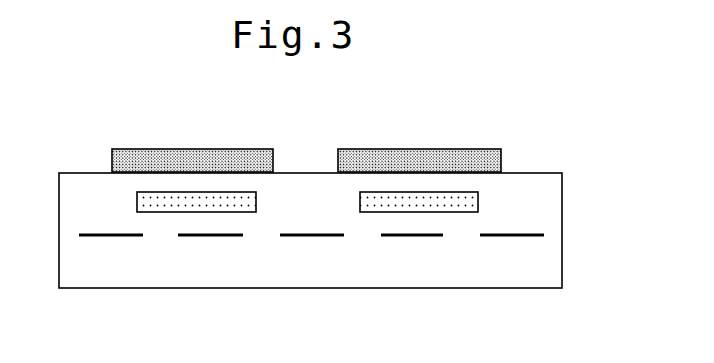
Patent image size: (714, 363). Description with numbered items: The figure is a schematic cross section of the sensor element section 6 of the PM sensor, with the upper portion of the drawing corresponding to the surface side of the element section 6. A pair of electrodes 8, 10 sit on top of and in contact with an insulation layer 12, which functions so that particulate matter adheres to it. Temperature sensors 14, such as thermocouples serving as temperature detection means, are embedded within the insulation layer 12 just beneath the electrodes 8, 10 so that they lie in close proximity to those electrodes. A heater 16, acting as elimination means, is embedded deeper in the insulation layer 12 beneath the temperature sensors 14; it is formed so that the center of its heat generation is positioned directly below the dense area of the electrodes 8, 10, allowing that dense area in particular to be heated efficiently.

The element section 6 is at (81, 128).
The electrode 8 is at (212, 148).
The electrode 10 is at (387, 148).
The insulation layer 12 is at (556, 190).
The temperature sensors 14 is at (373, 202).
The heater 16 is at (408, 238).